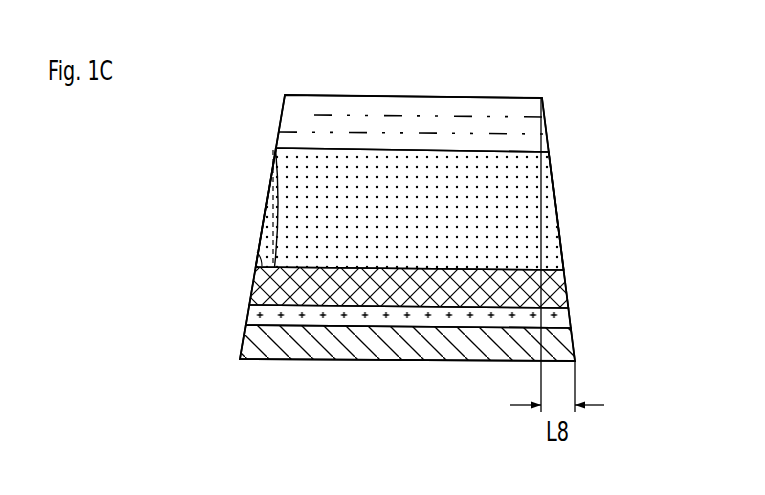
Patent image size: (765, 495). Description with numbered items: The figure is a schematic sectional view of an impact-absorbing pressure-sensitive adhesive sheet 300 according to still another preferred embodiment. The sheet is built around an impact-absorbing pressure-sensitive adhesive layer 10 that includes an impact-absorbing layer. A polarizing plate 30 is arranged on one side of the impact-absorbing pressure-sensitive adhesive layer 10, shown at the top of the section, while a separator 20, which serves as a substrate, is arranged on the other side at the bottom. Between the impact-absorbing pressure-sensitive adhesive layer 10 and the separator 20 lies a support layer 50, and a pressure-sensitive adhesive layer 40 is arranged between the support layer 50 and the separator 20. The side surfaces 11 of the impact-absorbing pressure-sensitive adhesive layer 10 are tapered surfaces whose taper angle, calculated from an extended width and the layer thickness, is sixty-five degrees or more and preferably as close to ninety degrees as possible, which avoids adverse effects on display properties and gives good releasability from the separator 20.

The impact-absorbing pressure-sensitive adhesive sheet 300 is at (524, 73).
The polarizing plate 30 is at (543, 113).
The impact-absorbing pressure-sensitive adhesive layer 10 is at (541, 213).
The side surface 11 is at (275, 148).
The support layer 50 is at (546, 290).
The pressure-sensitive adhesive layer 40 is at (550, 318).
The separator 20 is at (556, 352).